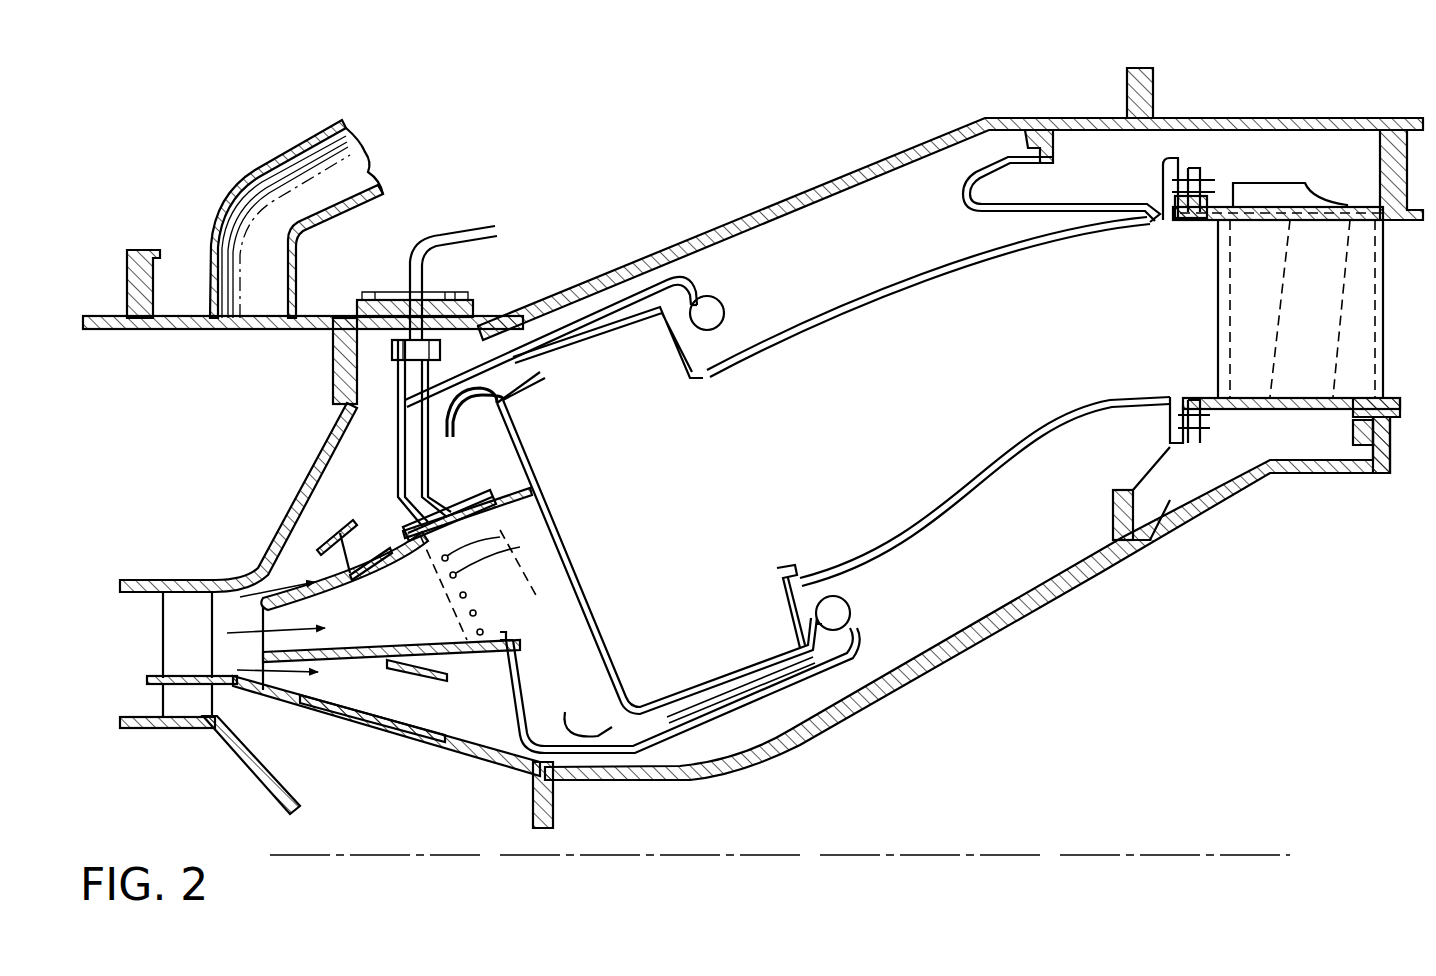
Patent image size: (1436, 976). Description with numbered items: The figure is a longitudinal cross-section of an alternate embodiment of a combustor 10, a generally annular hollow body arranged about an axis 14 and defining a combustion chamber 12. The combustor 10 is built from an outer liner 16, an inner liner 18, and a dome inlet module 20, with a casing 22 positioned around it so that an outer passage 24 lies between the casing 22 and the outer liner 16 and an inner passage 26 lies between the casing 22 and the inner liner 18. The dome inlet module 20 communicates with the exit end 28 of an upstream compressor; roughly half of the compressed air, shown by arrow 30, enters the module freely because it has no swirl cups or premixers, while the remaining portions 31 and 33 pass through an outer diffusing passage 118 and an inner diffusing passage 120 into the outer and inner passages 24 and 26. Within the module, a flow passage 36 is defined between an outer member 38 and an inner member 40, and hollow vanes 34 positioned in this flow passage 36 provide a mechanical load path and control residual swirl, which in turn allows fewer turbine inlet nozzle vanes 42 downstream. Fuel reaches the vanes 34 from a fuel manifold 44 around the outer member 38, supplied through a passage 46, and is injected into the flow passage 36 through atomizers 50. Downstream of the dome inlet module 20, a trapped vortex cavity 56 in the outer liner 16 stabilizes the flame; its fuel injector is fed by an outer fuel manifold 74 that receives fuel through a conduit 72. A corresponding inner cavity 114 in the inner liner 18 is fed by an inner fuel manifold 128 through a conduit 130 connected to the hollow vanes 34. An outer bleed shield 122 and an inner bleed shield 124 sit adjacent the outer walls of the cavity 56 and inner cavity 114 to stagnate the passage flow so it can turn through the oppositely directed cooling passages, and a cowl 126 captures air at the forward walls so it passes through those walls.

The combustor 10 is at (1030, 738).
The combustion chamber 12 is at (787, 445).
The axis 14 is at (918, 814).
The outer liner 16 is at (947, 304).
The inner liner 18 is at (1005, 447).
The dome inlet module 20 is at (618, 478).
The casing 22 is at (876, 226).
The outer passage 24 is at (808, 258).
The inner passage 26 is at (995, 545).
The exit end of compressor 28 is at (190, 555).
The compressed air flow 30 is at (232, 630).
The air flow portion 31 is at (263, 567).
The air flow portion 33 is at (296, 724).
The hollow vanes 34 is at (606, 557).
The flow passage 36 is at (391, 640).
The outer member 38 is at (407, 547).
The inner member 40 is at (462, 708).
The turbine inlet nozzle vane 42 is at (1218, 312).
The fuel manifold 44 is at (450, 493).
The passage 46 is at (395, 455).
The atomizers 50 is at (565, 525).
The trapped vortex cavity 56 is at (558, 393).
The conduit 72 is at (690, 270).
The outer fuel manifold 74 is at (757, 294).
The inner cavity 114 is at (664, 668).
The outer diffusing passage 118 is at (320, 545).
The inner diffusing passage 120 is at (356, 767).
The outer bleed shield 122 is at (618, 366).
The inner bleed shield 124 is at (763, 670).
The cowl 126 is at (620, 803).
The inner fuel manifold 128 is at (890, 574).
The conduit 130 is at (815, 743).